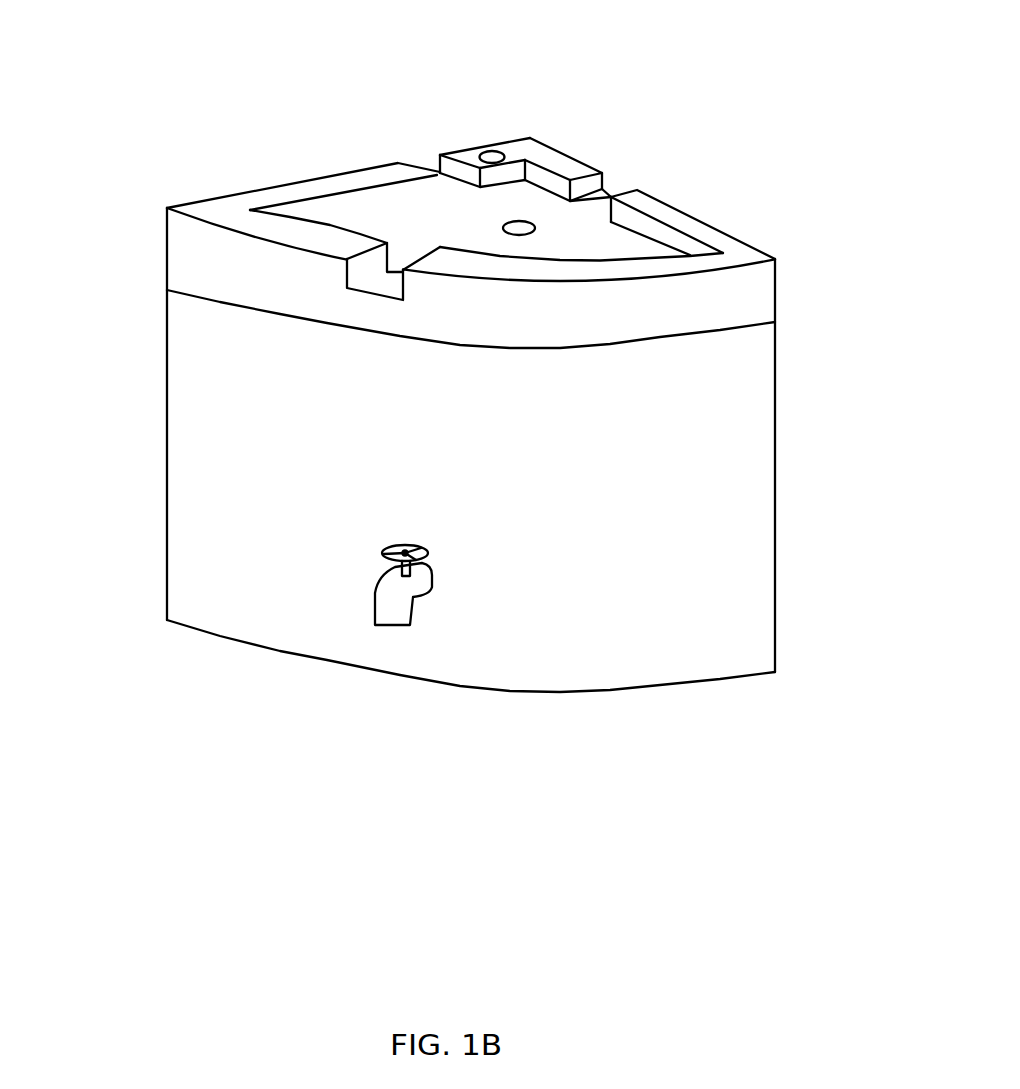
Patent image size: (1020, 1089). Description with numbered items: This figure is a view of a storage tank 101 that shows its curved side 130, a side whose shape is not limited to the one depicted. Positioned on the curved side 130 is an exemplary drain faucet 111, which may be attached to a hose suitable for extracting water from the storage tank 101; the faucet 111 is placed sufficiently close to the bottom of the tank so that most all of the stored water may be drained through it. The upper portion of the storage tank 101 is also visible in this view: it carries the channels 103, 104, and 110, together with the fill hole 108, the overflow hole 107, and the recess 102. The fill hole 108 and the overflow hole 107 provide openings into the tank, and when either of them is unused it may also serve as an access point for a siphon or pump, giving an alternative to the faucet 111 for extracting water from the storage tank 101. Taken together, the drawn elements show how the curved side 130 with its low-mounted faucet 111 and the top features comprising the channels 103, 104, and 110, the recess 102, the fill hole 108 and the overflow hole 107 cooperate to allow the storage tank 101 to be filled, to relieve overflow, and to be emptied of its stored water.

The storage tank 101 is at (787, 383).
The recess 102 is at (603, 245).
The channel 103 is at (433, 165).
The channel 104 is at (605, 187).
The overflow hole 107 is at (519, 228).
The fill hole 108 is at (494, 157).
The channel 110 is at (372, 264).
The drain faucet 111 is at (427, 605).
The curved side 130 is at (656, 537).